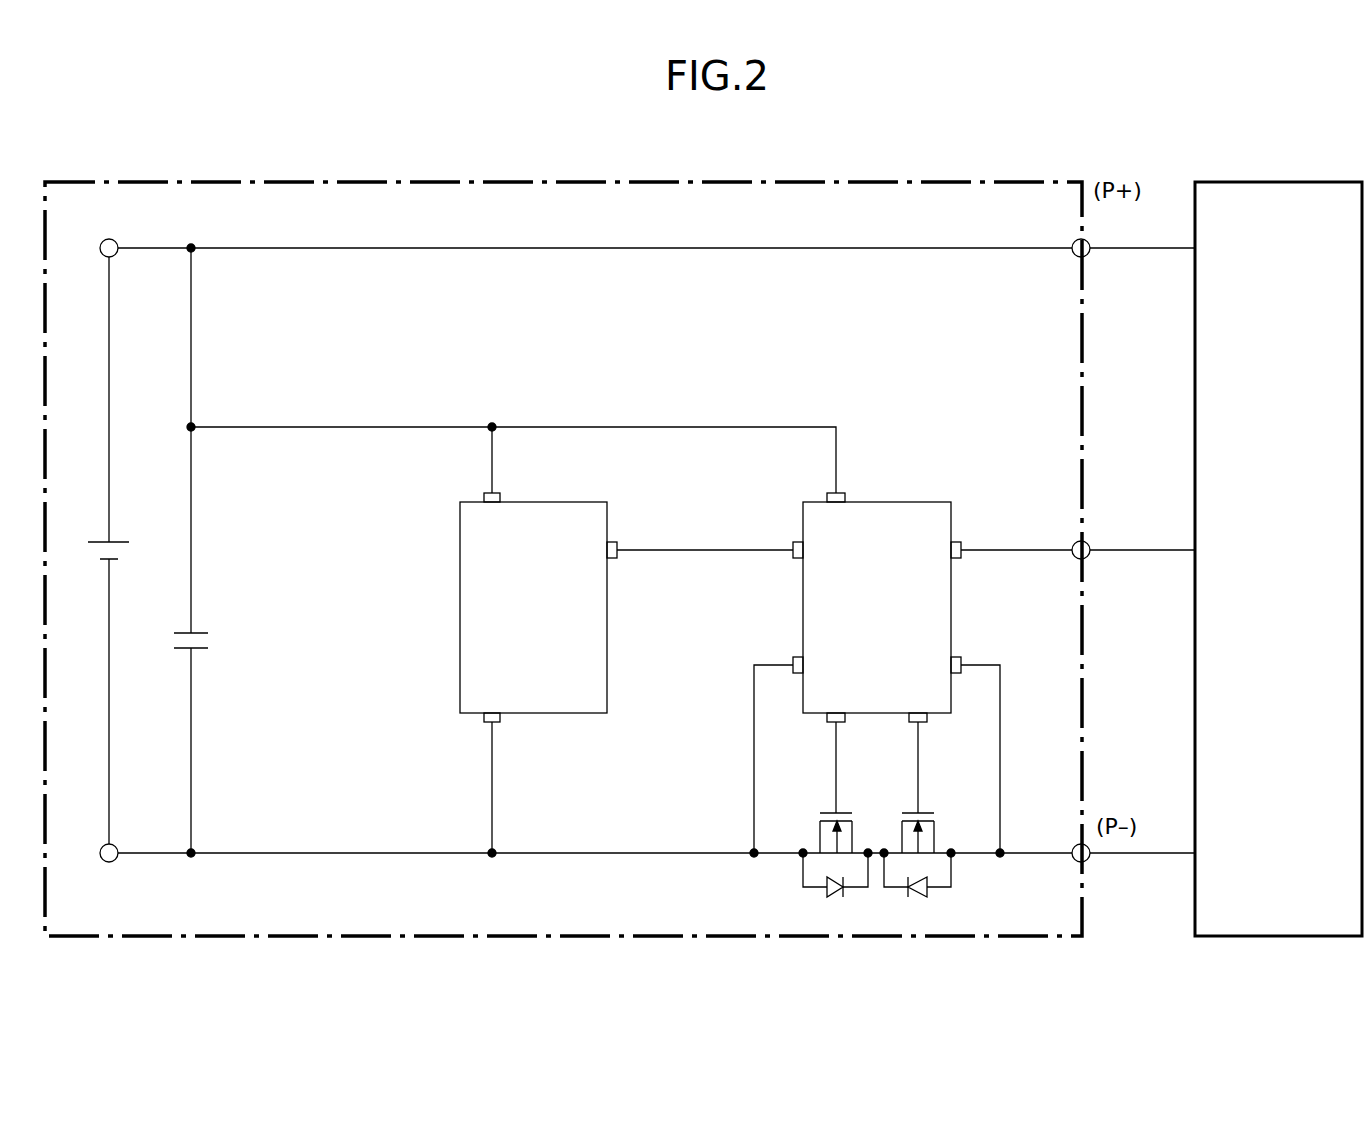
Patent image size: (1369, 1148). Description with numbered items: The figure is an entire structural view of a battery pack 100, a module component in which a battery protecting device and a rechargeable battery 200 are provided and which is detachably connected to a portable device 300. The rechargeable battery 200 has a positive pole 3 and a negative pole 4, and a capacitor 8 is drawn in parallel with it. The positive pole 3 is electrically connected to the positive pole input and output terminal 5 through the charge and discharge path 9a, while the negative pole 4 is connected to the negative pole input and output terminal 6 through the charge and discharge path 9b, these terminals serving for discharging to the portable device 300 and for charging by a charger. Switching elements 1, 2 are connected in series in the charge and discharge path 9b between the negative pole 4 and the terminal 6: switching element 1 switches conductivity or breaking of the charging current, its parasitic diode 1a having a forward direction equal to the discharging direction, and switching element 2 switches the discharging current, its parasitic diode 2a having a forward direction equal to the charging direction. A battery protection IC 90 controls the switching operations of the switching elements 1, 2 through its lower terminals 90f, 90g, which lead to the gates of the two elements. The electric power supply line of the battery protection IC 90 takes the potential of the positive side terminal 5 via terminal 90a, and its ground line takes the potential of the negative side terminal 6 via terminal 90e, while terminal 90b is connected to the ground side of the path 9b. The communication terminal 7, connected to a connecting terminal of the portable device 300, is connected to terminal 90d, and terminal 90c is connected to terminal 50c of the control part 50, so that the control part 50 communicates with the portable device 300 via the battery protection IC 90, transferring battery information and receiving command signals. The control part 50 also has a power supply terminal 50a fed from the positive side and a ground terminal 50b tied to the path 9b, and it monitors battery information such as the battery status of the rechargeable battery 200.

The battery pack 100 is at (900, 182).
The portable device 300 is at (1245, 182).
The rechargeable battery 200 is at (158, 520).
The switching element 1 is at (935, 812).
The switching element 2 is at (853, 812).
The parasitic (body) diode 1a is at (922, 894).
The parasitic (body) diode 2a is at (830, 894).
The positive pole 3 is at (116, 242).
The negative pole 4 is at (112, 862).
The positive pole input and output terminal 5 is at (1088, 242).
The negative pole input and output terminal 6 is at (1088, 860).
The communication terminal 7 is at (1088, 544).
The capacitor 8 is at (203, 633).
The charge and discharge path 9a is at (836, 248).
The charge and discharge path 9b is at (606, 853).
The control part 50 is at (460, 611).
The power supply terminal of control part 50a is at (500, 496).
The ground terminal of control part 50b is at (500, 720).
The terminal 50c is at (617, 542).
The battery protection IC 90 is at (803, 594).
The terminal 90a is at (845, 496).
The terminal 90b is at (793, 657).
The terminal 90c is at (793, 542).
The terminal 90d is at (961, 542).
The terminal 90e is at (961, 657).
The discharge control terminal of protection IC 90f is at (845, 720).
The charge control terminal of protection IC 90g is at (927, 720).